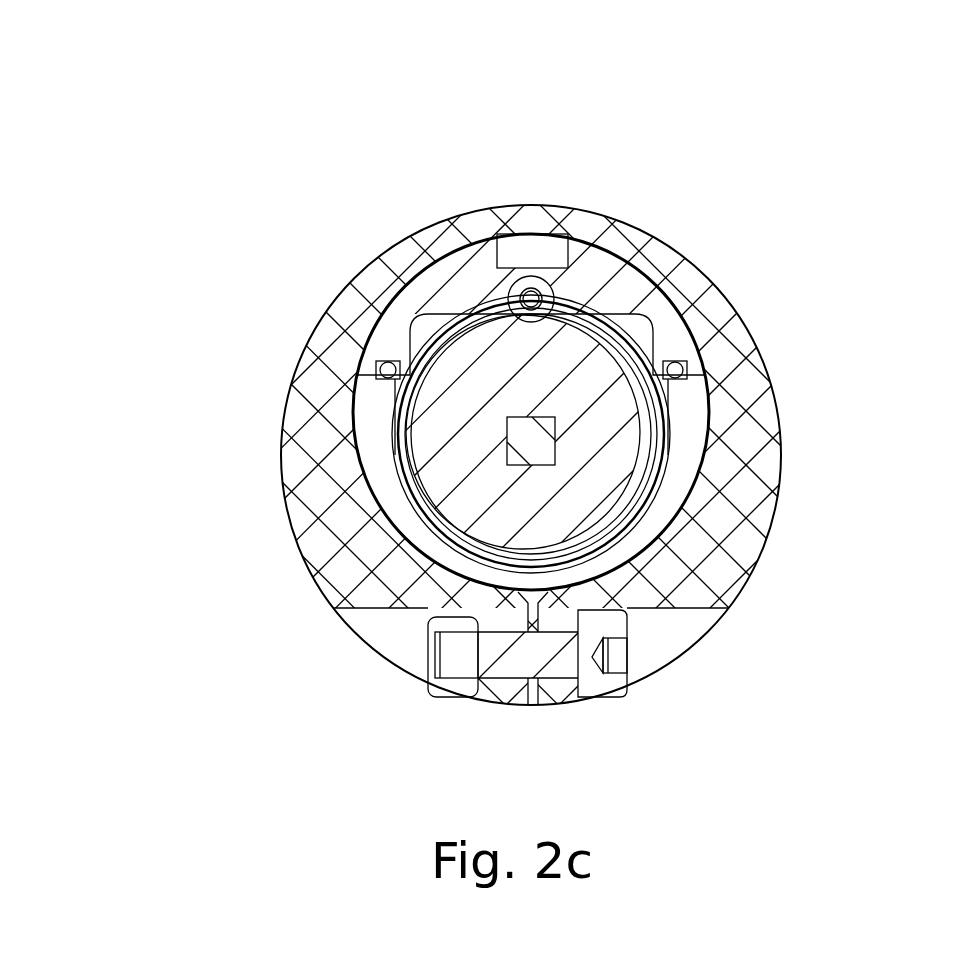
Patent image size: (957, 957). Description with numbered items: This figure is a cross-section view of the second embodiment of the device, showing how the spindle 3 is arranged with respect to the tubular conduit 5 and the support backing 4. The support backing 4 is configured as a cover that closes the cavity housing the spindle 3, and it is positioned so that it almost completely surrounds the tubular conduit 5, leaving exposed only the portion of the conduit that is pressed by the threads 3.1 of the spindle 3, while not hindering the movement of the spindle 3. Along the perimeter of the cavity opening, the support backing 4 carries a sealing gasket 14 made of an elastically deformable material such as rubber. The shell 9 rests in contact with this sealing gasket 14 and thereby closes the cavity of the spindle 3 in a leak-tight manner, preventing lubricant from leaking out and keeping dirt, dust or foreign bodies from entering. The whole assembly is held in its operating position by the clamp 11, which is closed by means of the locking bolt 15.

The spindle 3 is at (443, 422).
The threads 3.1 is at (643, 453).
The support backing 4 is at (595, 285).
The tubular conduit 5 is at (531, 298).
The shell 9 is at (668, 502).
The clamp 11 is at (348, 513).
The sealing gasket 14 is at (385, 370).
The locking bolt 15 is at (470, 658).